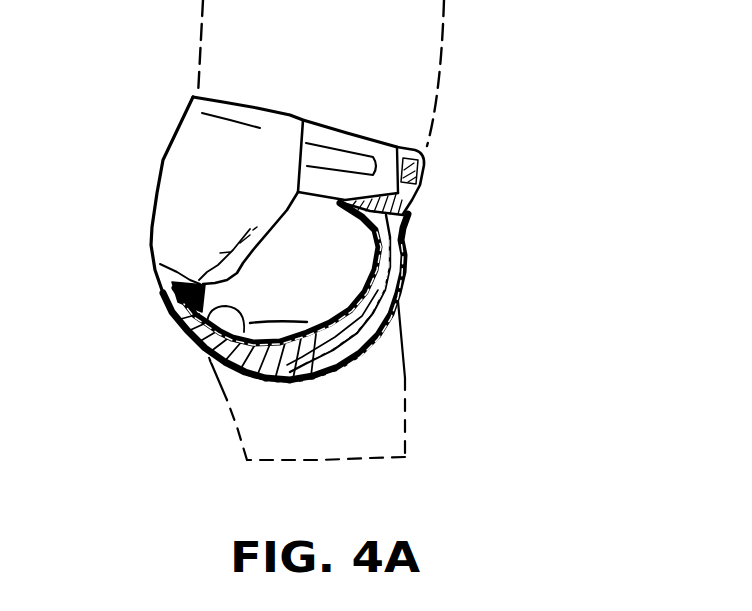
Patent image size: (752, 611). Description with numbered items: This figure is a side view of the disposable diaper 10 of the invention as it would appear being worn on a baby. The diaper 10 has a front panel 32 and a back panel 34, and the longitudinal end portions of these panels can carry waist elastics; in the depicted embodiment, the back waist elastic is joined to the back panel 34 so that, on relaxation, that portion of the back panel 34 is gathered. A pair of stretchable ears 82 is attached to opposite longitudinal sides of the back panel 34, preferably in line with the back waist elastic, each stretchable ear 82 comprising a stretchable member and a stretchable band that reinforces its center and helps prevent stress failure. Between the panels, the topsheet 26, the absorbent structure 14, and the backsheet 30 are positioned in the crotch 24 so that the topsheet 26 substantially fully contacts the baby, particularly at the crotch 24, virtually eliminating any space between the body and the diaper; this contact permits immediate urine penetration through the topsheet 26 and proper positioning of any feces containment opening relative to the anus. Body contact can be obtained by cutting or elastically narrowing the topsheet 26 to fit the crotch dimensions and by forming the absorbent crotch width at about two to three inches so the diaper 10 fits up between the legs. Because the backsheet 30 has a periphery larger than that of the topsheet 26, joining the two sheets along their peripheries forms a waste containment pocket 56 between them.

The diaper 10 is at (537, 152).
The back panel 34 is at (113, 112).
The stretchable ear 82 is at (352, 99).
The front panel 32 is at (436, 225).
The crotch 24 is at (175, 268).
The topsheet 26 is at (182, 320).
The absorbent structure 14 is at (220, 366).
The backsheet 30 is at (251, 374).
The waste containment pocket 56 is at (283, 347).